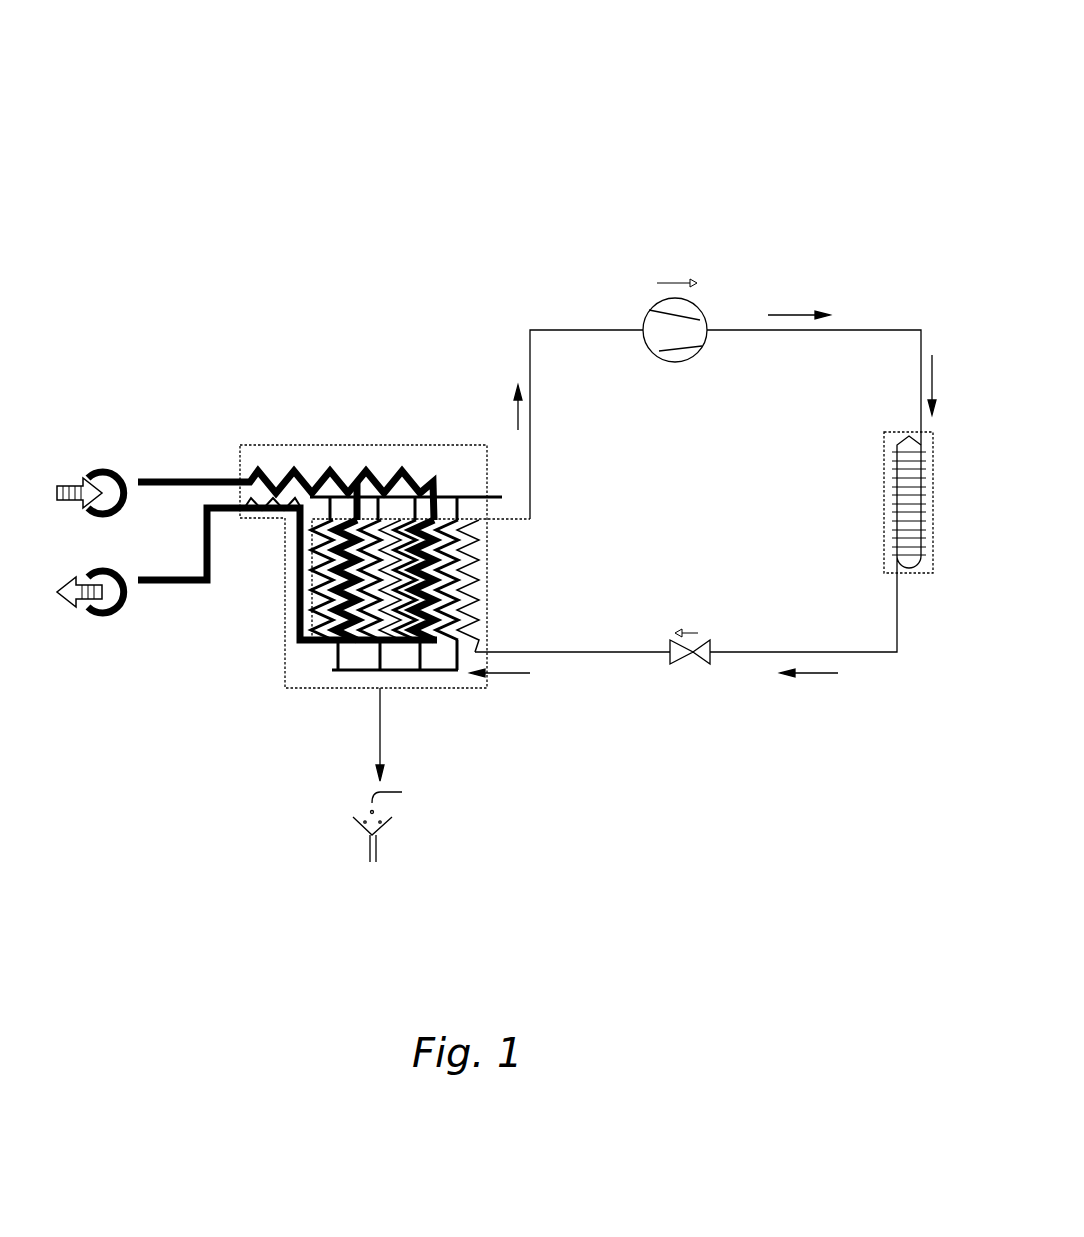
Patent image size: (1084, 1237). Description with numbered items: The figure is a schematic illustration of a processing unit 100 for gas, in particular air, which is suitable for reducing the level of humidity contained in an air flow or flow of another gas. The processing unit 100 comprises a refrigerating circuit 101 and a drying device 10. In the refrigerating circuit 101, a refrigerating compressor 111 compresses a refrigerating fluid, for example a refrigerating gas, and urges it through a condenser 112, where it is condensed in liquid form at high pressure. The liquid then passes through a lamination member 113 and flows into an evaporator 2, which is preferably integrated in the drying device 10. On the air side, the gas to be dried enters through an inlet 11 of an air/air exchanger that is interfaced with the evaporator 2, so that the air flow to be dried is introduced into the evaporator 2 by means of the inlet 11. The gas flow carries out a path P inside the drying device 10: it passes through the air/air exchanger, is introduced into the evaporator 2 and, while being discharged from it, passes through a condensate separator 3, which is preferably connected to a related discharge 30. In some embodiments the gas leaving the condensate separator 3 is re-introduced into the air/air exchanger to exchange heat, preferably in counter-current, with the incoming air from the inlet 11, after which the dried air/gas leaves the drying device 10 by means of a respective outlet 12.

The processing unit 100 is at (508, 178).
The drying device 10 is at (382, 418).
The inlet 11 is at (112, 467).
The outlet 12 is at (118, 640).
The path P is at (297, 462).
The evaporator 2 is at (478, 597).
The condensate separator 3 is at (300, 690).
The discharge 30 is at (367, 840).
The refrigerating circuit 101 is at (778, 722).
The refrigerating compressor 111 is at (695, 325).
The condenser 112 is at (912, 562).
The lamination member 113 is at (673, 664).